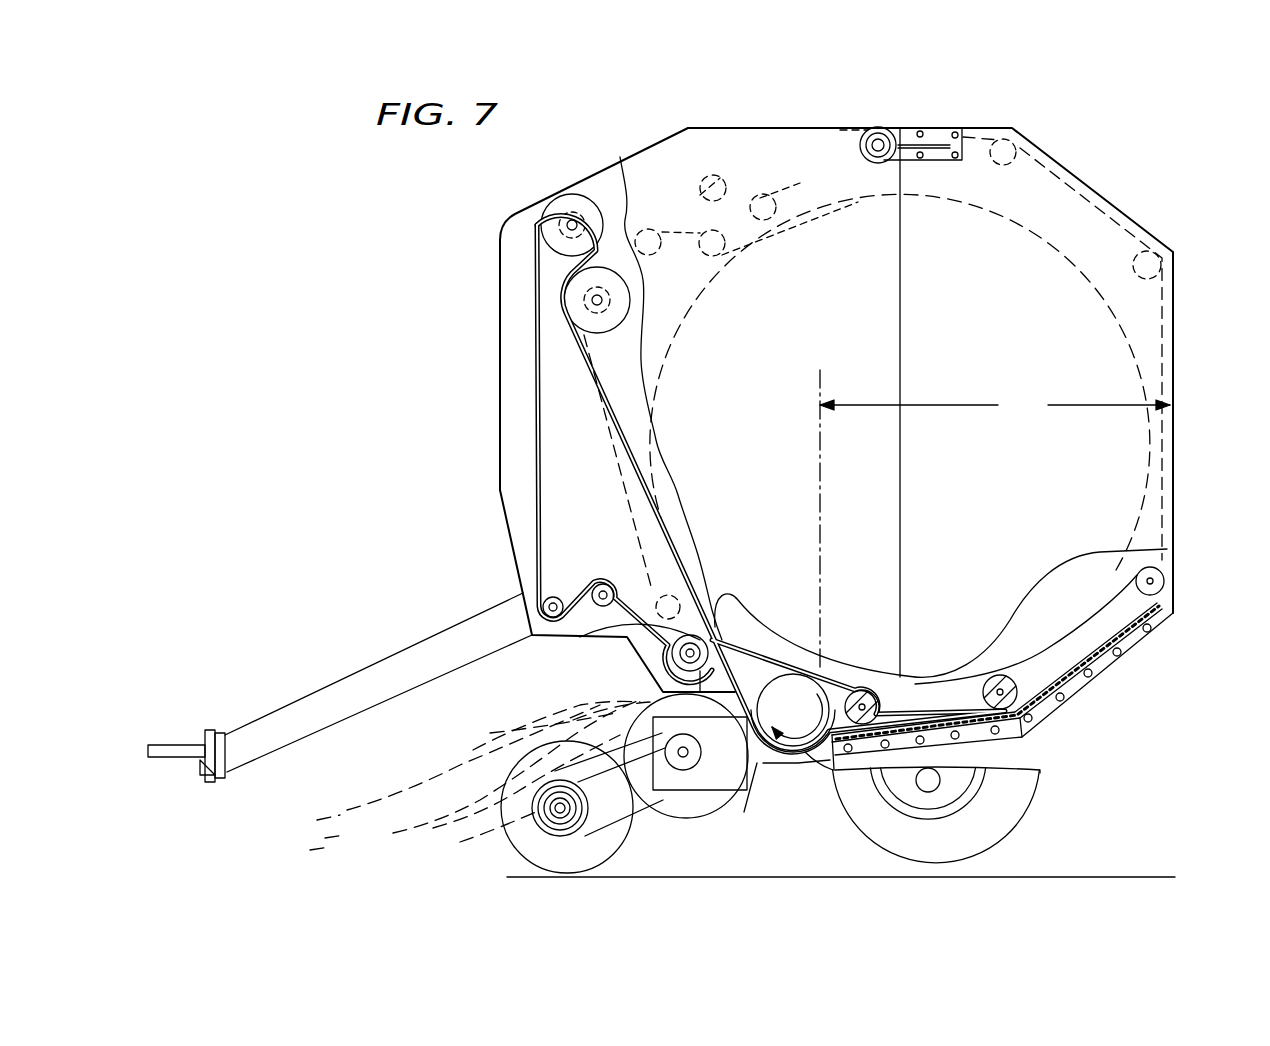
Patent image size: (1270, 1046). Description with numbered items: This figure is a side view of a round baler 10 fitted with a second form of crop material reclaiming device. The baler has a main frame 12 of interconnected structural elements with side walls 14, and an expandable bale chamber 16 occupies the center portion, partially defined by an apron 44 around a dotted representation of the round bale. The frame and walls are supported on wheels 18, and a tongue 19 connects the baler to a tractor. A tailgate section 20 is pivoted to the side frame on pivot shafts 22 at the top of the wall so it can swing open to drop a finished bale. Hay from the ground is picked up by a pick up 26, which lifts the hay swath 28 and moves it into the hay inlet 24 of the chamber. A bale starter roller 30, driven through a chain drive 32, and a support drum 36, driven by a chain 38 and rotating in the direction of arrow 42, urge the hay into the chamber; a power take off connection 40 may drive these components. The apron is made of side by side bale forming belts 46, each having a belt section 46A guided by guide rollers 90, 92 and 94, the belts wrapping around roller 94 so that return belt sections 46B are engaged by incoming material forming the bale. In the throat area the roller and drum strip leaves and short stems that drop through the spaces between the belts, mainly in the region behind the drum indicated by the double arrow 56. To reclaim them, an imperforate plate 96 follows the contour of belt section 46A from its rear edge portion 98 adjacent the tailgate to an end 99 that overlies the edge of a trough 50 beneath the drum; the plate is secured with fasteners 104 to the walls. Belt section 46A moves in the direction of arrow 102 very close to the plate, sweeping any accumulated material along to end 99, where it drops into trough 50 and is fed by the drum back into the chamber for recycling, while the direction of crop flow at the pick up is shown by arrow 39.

The baler 10 is at (488, 428).
The main frame 12 is at (447, 677).
The side walls 14 is at (655, 160).
The expandable bale chamber 16 is at (811, 278).
The wheels 18 is at (905, 862).
The tongue 19 is at (350, 683).
The tailgate section 20 is at (952, 130).
The pivot shafts 22 is at (877, 138).
The hay inlet 24 is at (736, 648).
The pick up 26 is at (603, 845).
The hay swath 28 is at (450, 812).
The bale starter roller 30 is at (640, 627).
The chain drive 32 is at (628, 440).
The support drum 36 is at (780, 727).
The chain 38 is at (770, 652).
The crop flow direction 39 is at (664, 702).
The power take off connection 40 is at (548, 605).
The arrow 42 is at (826, 765).
The apron 44 is at (1053, 240).
The bale forming belts 46 is at (960, 705).
The belt section 46A is at (1162, 597).
The belt sections 46B is at (1085, 612).
The trough 50 is at (823, 767).
The double arrow 56 is at (995, 404).
The guide roller 90 is at (1165, 575).
The guide roller 92 is at (1000, 675).
The guide roller 94 is at (863, 690).
The imperforate plate 96 is at (1033, 707).
The rear edge portion 98 is at (1162, 625).
The end of panel 99 is at (861, 772).
The arrow 102 is at (909, 705).
The fasteners 104 is at (1115, 662).